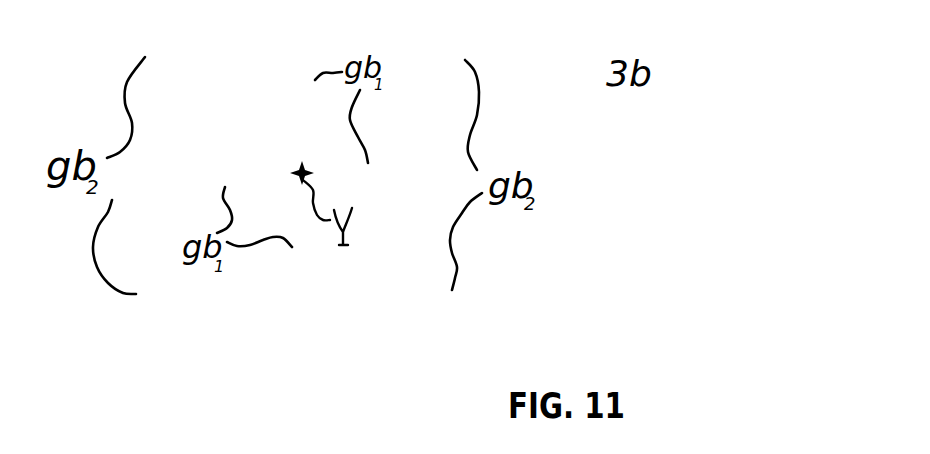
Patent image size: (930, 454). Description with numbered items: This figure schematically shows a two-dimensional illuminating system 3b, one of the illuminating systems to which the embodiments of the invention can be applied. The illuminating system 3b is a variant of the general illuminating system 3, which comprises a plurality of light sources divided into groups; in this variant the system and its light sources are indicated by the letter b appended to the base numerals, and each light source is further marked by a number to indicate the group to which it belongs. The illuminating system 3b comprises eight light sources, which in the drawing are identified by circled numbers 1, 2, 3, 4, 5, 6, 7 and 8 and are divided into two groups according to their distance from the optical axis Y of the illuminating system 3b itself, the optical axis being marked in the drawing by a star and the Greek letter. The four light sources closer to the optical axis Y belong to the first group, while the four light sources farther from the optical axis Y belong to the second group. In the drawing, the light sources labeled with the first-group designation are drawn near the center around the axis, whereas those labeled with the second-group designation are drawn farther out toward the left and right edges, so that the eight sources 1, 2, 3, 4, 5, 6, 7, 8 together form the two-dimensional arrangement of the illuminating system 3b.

The first line segment 1 is at (136, 95).
The second line segment 2 is at (459, 102).
The illuminating system 3 is at (316, 87).
The fourth line segment 4 is at (226, 197).
The fifth line segment 5 is at (369, 139).
The sixth line segment 6 is at (269, 254).
The seventh line segment 7 is at (127, 257).
The eighth line segment 8 is at (459, 255).
The two-dimensional illuminating system 3b is at (528, 109).